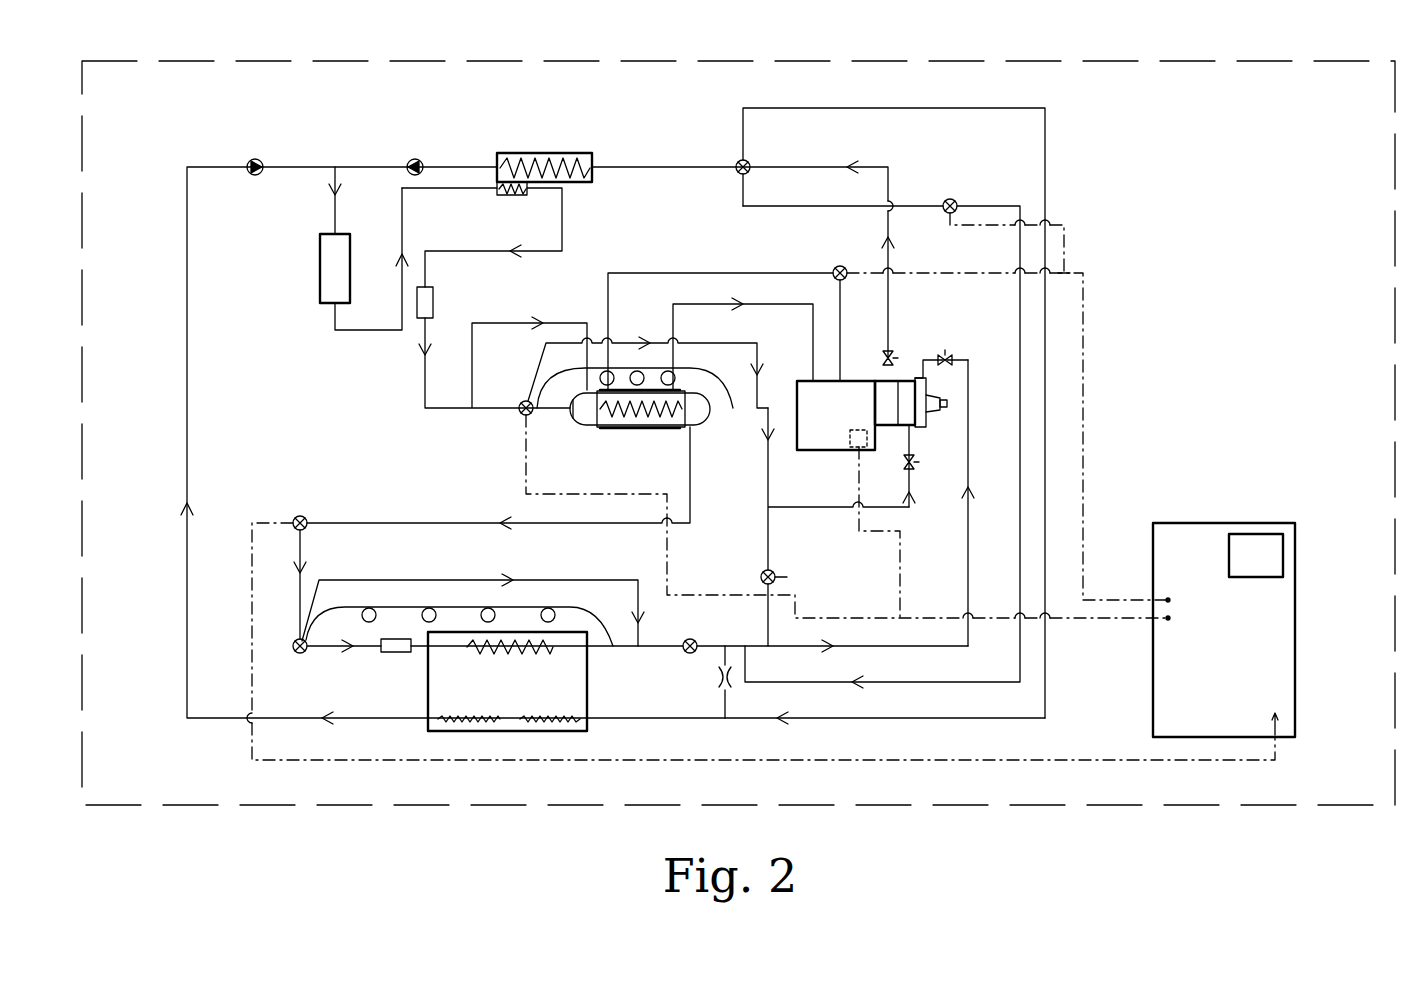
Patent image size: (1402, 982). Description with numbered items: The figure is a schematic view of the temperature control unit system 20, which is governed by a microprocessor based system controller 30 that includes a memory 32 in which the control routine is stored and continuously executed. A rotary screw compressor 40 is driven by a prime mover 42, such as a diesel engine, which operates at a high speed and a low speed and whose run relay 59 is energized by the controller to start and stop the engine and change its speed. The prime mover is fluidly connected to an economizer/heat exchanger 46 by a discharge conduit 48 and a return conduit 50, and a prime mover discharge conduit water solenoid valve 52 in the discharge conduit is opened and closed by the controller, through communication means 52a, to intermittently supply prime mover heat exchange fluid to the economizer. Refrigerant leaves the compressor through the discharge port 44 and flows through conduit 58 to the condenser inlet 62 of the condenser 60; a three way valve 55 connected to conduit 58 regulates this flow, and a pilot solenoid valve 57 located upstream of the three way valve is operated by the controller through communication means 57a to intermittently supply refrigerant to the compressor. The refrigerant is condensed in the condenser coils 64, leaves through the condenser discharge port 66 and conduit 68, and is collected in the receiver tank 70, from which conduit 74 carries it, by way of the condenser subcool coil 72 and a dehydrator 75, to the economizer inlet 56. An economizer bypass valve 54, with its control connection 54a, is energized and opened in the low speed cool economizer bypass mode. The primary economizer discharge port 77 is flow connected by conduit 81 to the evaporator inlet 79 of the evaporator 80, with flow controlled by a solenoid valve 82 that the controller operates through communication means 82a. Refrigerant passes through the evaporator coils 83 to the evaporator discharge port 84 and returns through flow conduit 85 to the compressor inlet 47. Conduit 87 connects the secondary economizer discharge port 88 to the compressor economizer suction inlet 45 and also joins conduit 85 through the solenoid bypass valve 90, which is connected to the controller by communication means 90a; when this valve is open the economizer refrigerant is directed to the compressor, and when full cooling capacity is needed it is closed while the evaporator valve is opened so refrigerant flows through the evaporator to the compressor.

The temperature control unit system 20 is at (958, 818).
The system controller 30 is at (1270, 623).
The memory 32 is at (1252, 548).
The compressor 40 is at (912, 420).
The prime mover 42 is at (815, 438).
The discharge port 44 is at (885, 380).
The compressor economizer suction inlet 45 is at (912, 428).
The economizer/heat exchanger 46 is at (590, 417).
The compressor inlet 47 is at (922, 375).
The discharge conduit 48 is at (725, 272).
The return conduit 50 is at (785, 306).
The prime mover discharge conduit water solenoid valve 52 is at (841, 266).
The communication means 52a is at (932, 272).
The economizer bypass valve 54 is at (522, 403).
The control line 54a is at (575, 494).
The three way valve 55 is at (738, 162).
The economizer inlet 56 is at (578, 415).
The pilot solenoid valve 57 is at (957, 202).
The communication means 57a is at (1070, 222).
The conduit 58 is at (893, 166).
The run relay 59 is at (858, 430).
The condenser 60 is at (552, 150).
The condenser inlet 62 is at (594, 165).
The condenser coils 64 is at (576, 184).
The condenser discharge port 66 is at (496, 165).
The conduit 68 is at (373, 163).
The receiver tank 70 is at (334, 276).
The condenser subcool coil 72 is at (512, 194).
The conduit 74 is at (546, 254).
The dehydrator 75 is at (440, 302).
The primary economizer discharge port 77 is at (690, 427).
The evaporator inlet 79 is at (428, 649).
The evaporator 80 is at (590, 688).
The conduit 81 is at (302, 551).
The solenoid valve 82 is at (305, 518).
The communication means 82a is at (262, 518).
The evaporator coils 83 is at (515, 656).
The evaporator discharge port 84 is at (595, 647).
The flow conduit 85 is at (970, 410).
The conduit 87 is at (768, 492).
The secondary economizer discharge port 88 is at (712, 416).
The solenoid bypass valve 90 is at (762, 572).
The communication means 90a is at (822, 616).